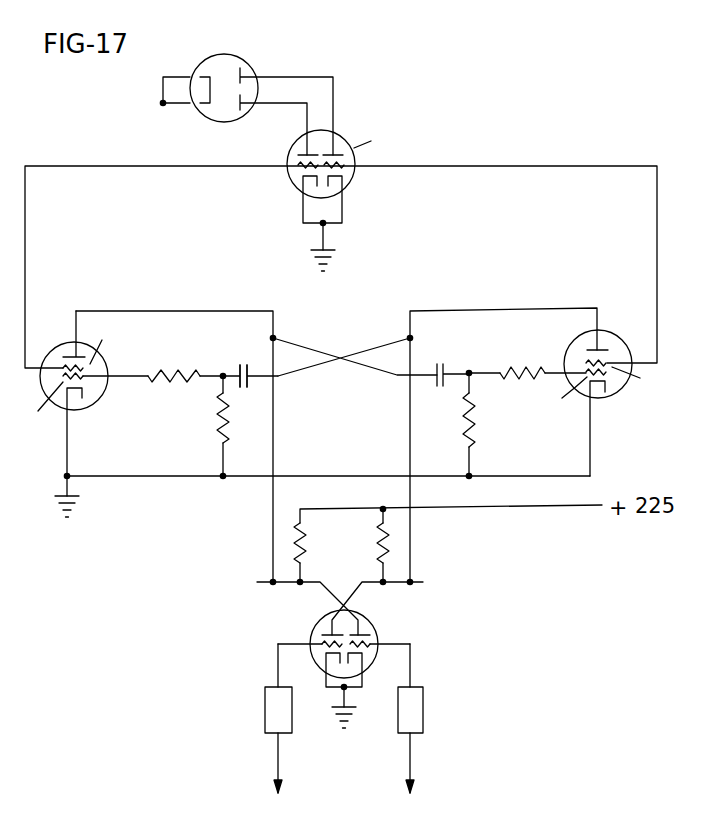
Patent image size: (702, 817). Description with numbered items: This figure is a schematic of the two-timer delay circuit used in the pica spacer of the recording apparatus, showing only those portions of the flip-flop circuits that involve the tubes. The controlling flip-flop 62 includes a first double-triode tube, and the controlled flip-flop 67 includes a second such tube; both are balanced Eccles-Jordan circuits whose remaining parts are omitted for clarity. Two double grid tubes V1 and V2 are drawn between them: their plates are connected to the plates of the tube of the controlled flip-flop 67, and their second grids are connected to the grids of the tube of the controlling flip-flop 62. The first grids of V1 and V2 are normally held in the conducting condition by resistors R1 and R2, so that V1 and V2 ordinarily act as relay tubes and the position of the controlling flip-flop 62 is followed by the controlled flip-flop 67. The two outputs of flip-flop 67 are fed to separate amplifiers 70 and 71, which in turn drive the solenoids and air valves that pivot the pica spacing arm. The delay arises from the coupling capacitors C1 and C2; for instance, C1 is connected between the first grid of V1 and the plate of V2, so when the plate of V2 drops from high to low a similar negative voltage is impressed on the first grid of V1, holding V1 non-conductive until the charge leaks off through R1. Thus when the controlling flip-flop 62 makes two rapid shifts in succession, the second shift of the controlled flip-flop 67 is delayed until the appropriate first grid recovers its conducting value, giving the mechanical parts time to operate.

The controlling flip-flop circuit 62 is at (358, 127).
The controlled flip-flop circuit 67 is at (383, 617).
The amplifier 70 is at (424, 710).
The amplifier 71 is at (268, 713).
The double grid tube V1 is at (62, 345).
The double grid tube V2 is at (612, 342).
The resistor R1 is at (214, 430).
The resistor R2 is at (463, 434).
The coupling capacitor C1 is at (247, 362).
The coupling capacitor C2 is at (439, 362).